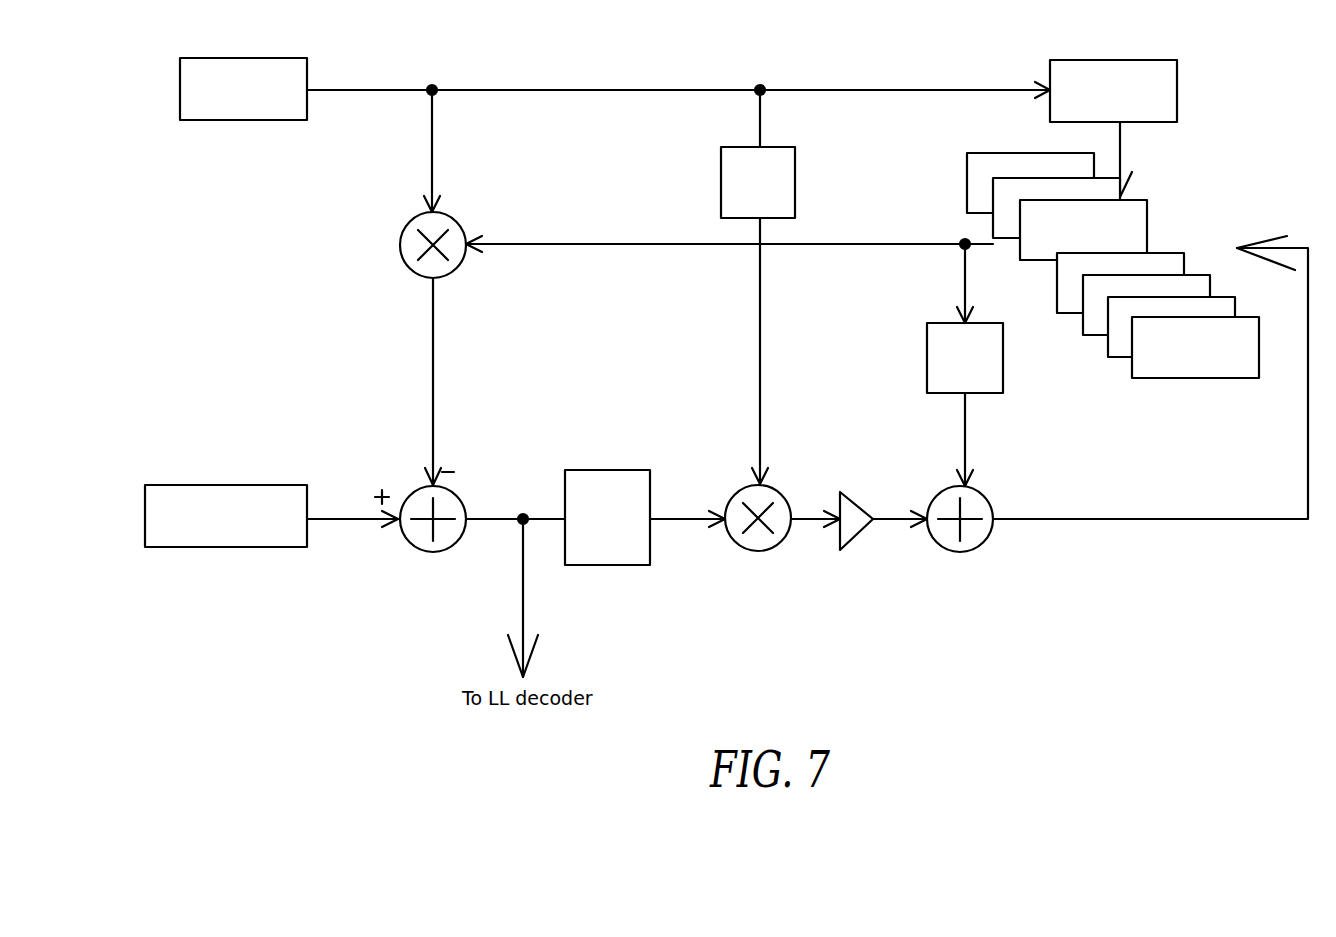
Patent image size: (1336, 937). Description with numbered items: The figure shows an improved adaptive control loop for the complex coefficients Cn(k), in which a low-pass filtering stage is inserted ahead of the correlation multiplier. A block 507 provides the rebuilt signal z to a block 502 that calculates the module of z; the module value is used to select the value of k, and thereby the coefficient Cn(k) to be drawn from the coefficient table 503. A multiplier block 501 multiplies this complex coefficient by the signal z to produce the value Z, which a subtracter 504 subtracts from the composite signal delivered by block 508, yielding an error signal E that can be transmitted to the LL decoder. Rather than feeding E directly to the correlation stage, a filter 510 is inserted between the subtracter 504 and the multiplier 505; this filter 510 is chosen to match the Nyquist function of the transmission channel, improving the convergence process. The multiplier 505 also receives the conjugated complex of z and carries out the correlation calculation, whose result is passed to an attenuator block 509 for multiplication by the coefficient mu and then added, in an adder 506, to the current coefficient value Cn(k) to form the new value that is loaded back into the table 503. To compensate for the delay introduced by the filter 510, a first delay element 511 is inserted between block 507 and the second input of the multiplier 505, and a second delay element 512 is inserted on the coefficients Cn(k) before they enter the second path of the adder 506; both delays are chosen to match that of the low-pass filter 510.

The multiplier block 501 is at (405, 232).
The module calculation block 502 is at (1050, 60).
The coefficient table 503 is at (1082, 325).
The subtracter 504 is at (452, 547).
The multiplier 505 is at (732, 492).
The adder 506 is at (943, 490).
The rebuilt signal block 507 is at (307, 58).
The composite signal block 508 is at (288, 485).
The attenuator block 509 is at (842, 490).
The low pass filter 510 is at (585, 470).
The first delay element 511 is at (721, 195).
The second delay element 512 is at (927, 367).